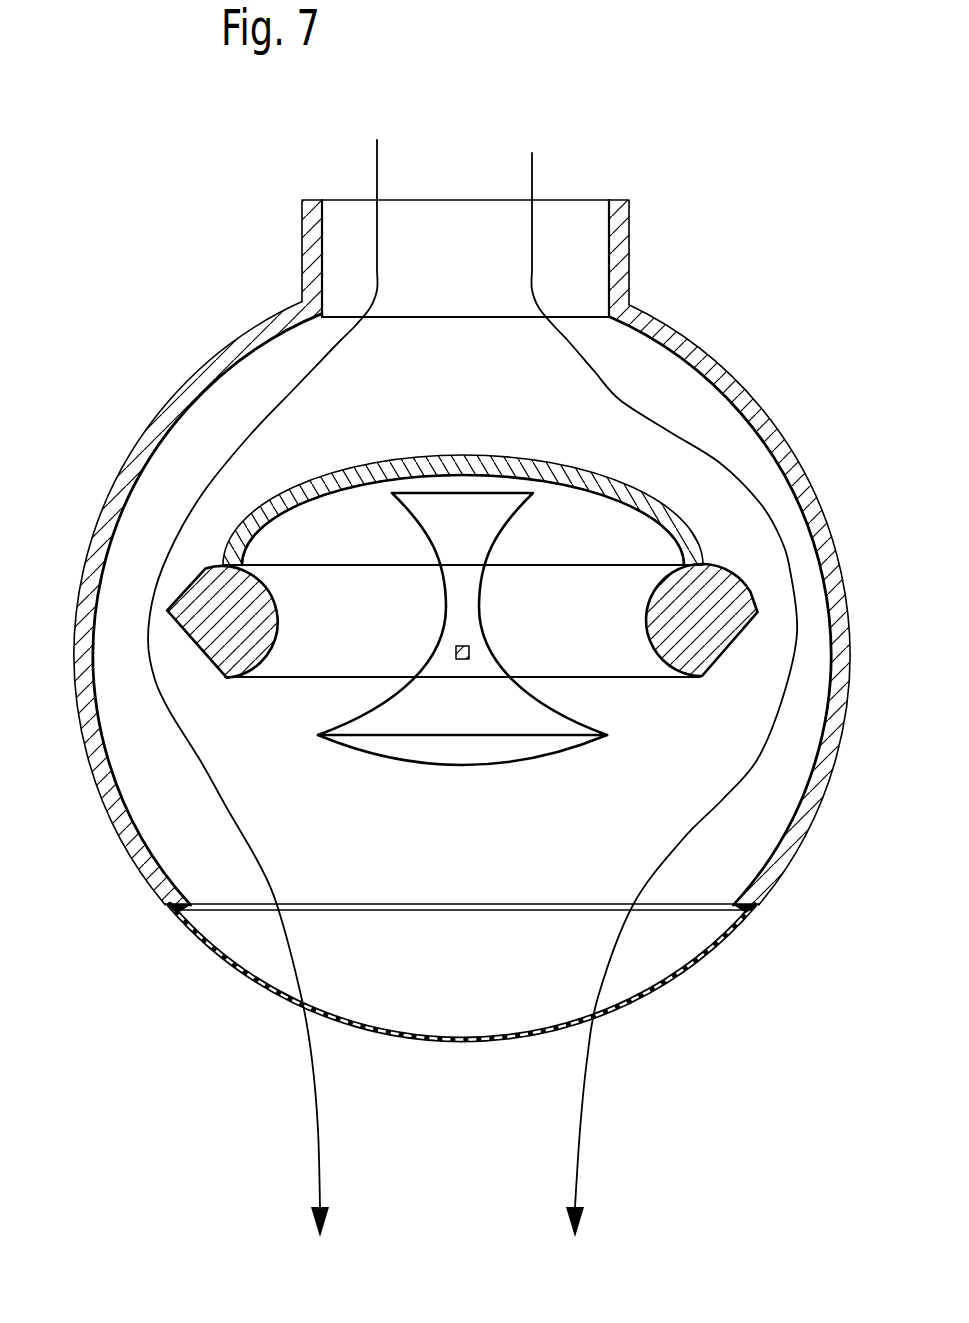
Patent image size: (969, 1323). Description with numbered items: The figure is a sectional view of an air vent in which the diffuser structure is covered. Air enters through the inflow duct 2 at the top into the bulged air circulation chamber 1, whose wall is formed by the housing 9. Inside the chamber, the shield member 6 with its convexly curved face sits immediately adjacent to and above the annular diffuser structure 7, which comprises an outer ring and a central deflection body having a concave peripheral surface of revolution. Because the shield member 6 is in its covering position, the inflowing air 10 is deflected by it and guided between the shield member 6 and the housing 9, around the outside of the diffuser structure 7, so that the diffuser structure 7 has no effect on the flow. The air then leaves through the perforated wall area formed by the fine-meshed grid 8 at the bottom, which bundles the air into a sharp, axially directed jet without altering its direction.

The air circulation chamber 1 is at (476, 833).
The inflow duct 2 is at (452, 238).
The shield member 6 is at (458, 458).
The diffuser structure 7 is at (678, 638).
The fine-meshed grid 8 is at (643, 992).
The housing 9 is at (818, 790).
The inflowing air 10 is at (163, 530).